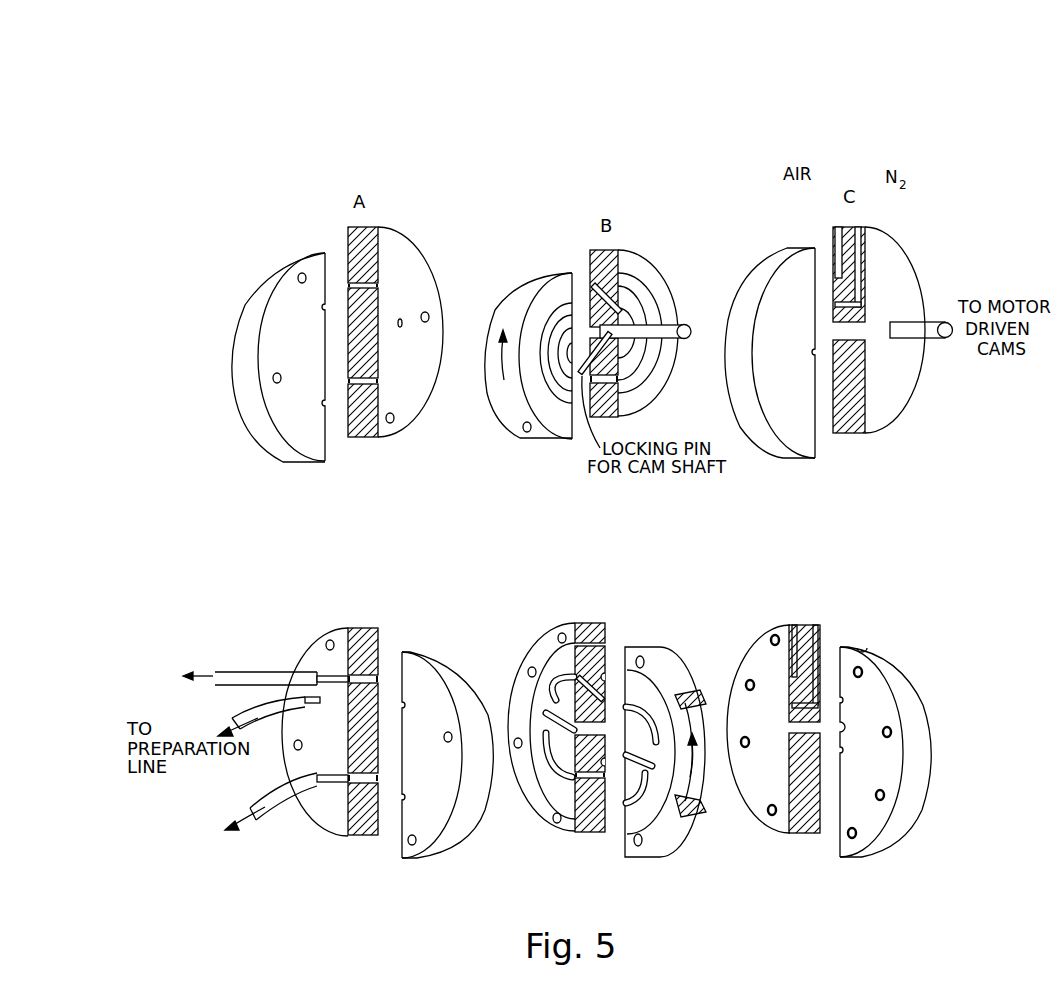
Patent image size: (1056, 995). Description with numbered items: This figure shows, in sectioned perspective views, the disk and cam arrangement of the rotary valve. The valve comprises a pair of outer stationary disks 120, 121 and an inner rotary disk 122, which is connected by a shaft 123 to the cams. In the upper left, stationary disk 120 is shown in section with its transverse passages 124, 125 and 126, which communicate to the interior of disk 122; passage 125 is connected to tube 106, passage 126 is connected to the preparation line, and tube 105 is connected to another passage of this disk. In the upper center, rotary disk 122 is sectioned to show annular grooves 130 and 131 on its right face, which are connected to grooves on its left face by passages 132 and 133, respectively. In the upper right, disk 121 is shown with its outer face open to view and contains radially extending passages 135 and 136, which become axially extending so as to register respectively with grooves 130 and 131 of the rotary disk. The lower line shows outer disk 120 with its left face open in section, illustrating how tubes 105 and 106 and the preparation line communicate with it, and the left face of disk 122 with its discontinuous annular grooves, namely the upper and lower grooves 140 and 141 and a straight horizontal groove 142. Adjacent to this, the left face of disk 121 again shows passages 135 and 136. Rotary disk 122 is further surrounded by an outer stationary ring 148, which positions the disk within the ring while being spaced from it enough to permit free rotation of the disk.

The tube 105 is at (255, 673).
The tube 106 is at (272, 790).
The outer stationary disk 120 is at (270, 277).
The outer stationary disk 121 is at (895, 268).
The inner rotary disk 122 is at (637, 262).
The shaft 123 is at (658, 328).
The transverse passage 124 is at (380, 287).
The transverse passage 125 is at (380, 383).
The transverse passage 126 is at (402, 320).
The annular groove 130 is at (642, 292).
The annular groove 131 is at (627, 353).
The passage 132 is at (613, 385).
The passage 133 is at (594, 284).
The radially extending passage 135 is at (839, 227).
The radially extending passage 136 is at (858, 227).
The upper groove 140 is at (624, 698).
The lower groove 141 is at (553, 770).
The straight horizontal groove 142 is at (623, 793).
The outer stationary ring 148 is at (673, 838).